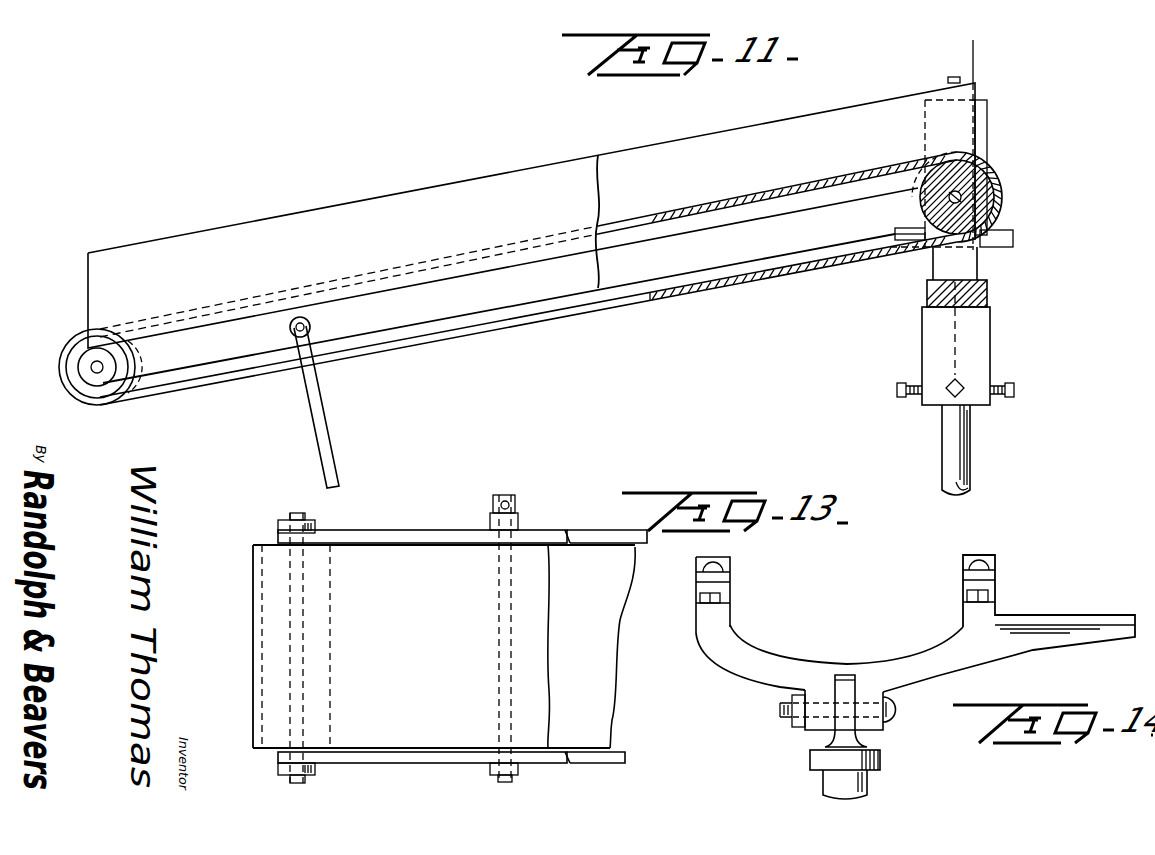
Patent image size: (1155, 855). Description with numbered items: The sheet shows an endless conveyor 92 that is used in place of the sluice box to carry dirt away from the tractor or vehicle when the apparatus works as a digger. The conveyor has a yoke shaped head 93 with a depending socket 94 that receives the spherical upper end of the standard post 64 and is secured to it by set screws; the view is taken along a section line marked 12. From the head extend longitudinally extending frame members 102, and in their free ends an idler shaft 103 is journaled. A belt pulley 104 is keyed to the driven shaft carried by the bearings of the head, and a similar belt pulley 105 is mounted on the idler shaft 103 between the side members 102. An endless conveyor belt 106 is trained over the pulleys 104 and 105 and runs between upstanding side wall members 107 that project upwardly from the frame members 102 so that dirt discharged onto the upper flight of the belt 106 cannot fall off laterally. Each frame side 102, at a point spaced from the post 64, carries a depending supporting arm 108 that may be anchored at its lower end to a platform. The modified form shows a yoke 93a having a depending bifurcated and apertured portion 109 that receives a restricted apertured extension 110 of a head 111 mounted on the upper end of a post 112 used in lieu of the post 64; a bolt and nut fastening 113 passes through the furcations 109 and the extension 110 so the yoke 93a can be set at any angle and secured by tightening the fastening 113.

In FIG. 11, the section line 12-12 / shaft slot 12 is at (976, 62).
In FIG. 11, the standard post 64 is at (950, 424).
In FIG. 11, the endless conveyor 92 is at (818, 276).
In FIG. 11, the yoke shaped head 93 is at (992, 300).
In FIG. 14, the modified yoke 93a is at (734, 676).
In FIG. 11, the depending socket 94 is at (992, 370).
In FIG. 11, the frame members 102 is at (637, 268).
In FIG. 13, the frame members 102 is at (588, 530).
In FIG. 11, the idler shaft 103 is at (95, 367).
In FIG. 13, the idler shaft 103 is at (292, 516).
In FIG. 11, the belt pulley 104 is at (990, 193).
In FIG. 11, the belt pulley 105 is at (90, 390).
In FIG. 13, the belt pulley 105 is at (265, 598).
In FIG. 11, the endless conveyor belt 106 is at (622, 222).
In FIG. 13, the endless conveyor belt 106 is at (444, 646).
In FIG. 11, the side wall members 107 is at (424, 208).
In FIG. 13, the side wall members 107 is at (392, 532).
In FIG. 11, the supporting arm 108 is at (320, 403).
In FIG. 13, the supporting arm 108 is at (515, 515).
In FIG. 14, the bifurcated apertured portion 109 is at (807, 728).
In FIG. 14, the apertured extension 110 is at (845, 687).
In FIG. 14, the head 111 is at (880, 766).
In FIG. 14, the post 112 is at (830, 784).
In FIG. 14, the bolt and nut fastening 113 is at (893, 712).